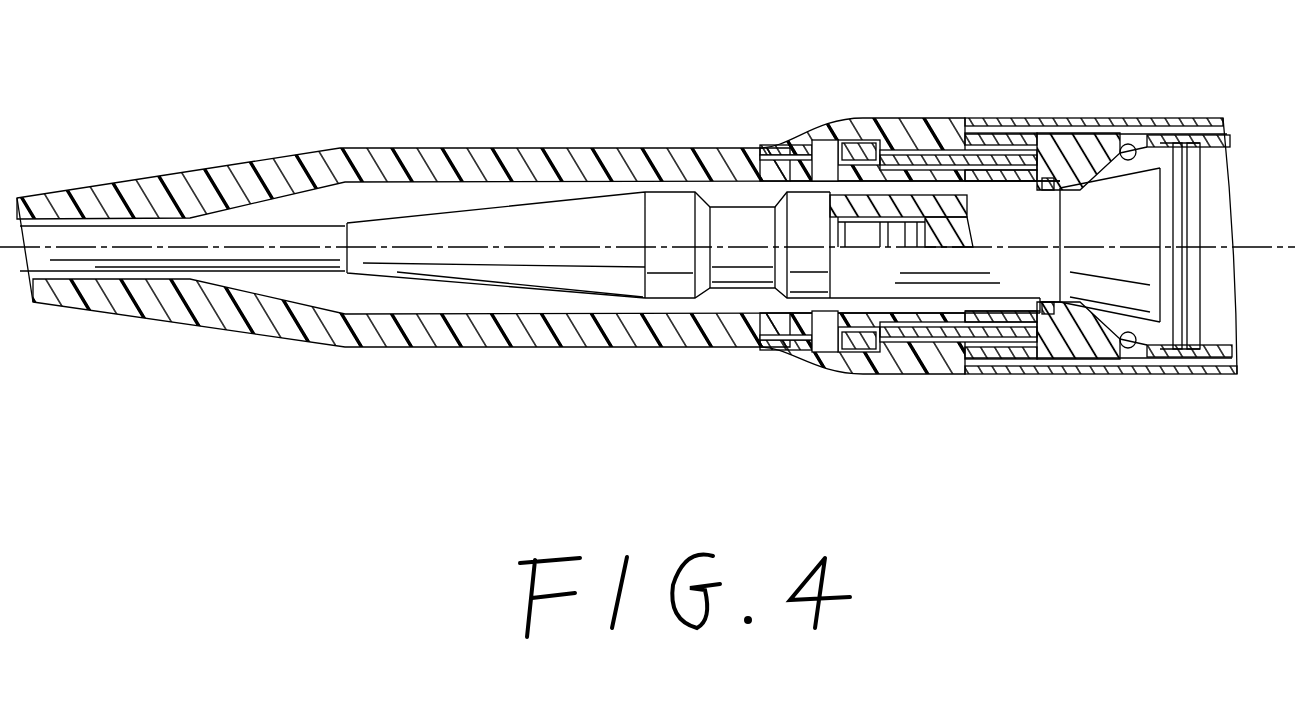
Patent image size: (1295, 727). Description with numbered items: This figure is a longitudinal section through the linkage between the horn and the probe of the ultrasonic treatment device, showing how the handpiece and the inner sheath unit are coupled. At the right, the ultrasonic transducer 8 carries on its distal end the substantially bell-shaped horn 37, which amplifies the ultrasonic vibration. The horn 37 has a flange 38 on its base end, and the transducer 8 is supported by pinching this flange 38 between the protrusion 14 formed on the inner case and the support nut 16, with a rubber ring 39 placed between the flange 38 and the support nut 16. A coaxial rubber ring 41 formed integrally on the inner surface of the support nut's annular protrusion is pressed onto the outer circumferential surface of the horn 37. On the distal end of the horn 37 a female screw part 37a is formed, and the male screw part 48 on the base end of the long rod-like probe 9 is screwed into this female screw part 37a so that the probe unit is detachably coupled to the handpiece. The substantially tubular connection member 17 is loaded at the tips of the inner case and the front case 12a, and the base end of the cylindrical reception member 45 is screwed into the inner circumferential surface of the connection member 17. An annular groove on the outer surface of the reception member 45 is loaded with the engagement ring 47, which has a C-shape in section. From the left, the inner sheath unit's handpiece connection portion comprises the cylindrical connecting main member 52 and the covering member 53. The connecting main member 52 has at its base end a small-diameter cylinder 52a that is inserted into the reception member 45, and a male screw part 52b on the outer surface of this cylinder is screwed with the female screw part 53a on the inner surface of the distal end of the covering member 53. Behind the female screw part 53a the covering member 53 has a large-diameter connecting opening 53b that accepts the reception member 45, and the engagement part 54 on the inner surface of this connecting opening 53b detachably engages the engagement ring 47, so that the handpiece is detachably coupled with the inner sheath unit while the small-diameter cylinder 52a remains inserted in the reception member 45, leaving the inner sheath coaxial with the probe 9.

The ultrasonic transducer 8 is at (1212, 218).
The probe 9 is at (575, 215).
The front case 12a is at (1170, 122).
The protrusion 14 is at (1205, 350).
The support nut 16 is at (1070, 345).
The connection member 17 is at (970, 369).
The horn 37 is at (1100, 190).
The female screw part 37a is at (917, 143).
The flange 38 is at (1197, 175).
The rubber ring 39 is at (1135, 350).
The rubber ring 41 is at (1047, 303).
The reception member 45 is at (875, 373).
The engagement ring 47 is at (910, 380).
The male screw part 48 is at (862, 232).
The connecting main member 52 is at (548, 342).
The small-diameter cylinder 52a is at (1003, 369).
The male screw part 52b is at (778, 350).
The covering member 53 is at (830, 352).
The female screw part 53a is at (782, 152).
The connecting opening 53b is at (845, 143).
The engagement part 54 is at (940, 369).